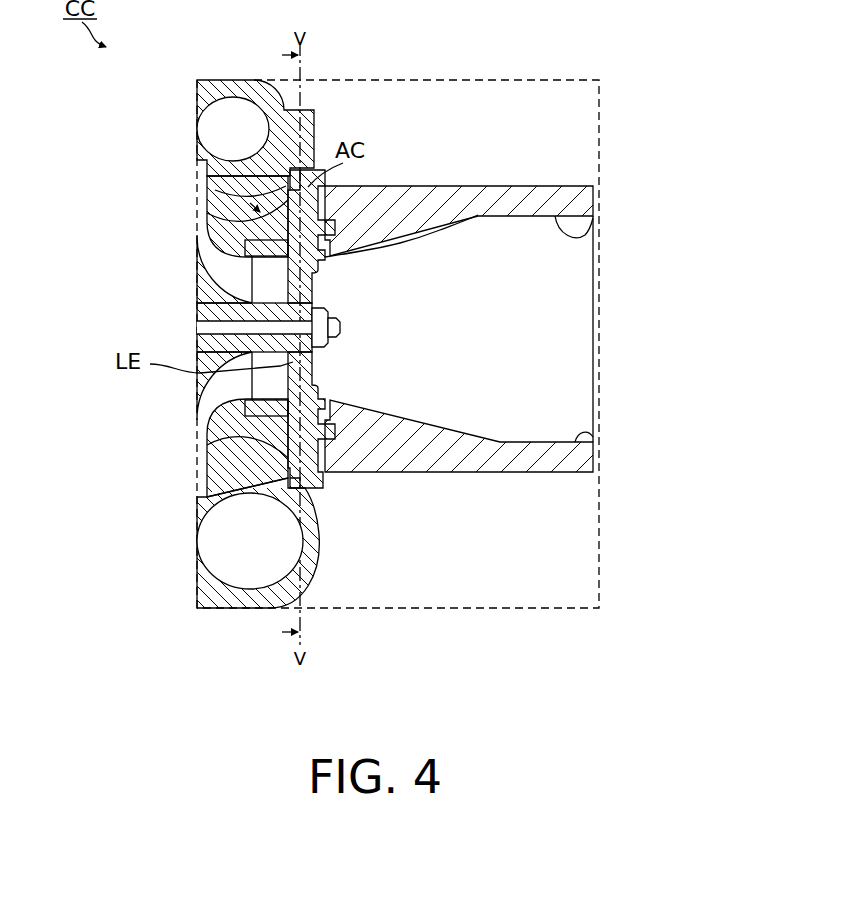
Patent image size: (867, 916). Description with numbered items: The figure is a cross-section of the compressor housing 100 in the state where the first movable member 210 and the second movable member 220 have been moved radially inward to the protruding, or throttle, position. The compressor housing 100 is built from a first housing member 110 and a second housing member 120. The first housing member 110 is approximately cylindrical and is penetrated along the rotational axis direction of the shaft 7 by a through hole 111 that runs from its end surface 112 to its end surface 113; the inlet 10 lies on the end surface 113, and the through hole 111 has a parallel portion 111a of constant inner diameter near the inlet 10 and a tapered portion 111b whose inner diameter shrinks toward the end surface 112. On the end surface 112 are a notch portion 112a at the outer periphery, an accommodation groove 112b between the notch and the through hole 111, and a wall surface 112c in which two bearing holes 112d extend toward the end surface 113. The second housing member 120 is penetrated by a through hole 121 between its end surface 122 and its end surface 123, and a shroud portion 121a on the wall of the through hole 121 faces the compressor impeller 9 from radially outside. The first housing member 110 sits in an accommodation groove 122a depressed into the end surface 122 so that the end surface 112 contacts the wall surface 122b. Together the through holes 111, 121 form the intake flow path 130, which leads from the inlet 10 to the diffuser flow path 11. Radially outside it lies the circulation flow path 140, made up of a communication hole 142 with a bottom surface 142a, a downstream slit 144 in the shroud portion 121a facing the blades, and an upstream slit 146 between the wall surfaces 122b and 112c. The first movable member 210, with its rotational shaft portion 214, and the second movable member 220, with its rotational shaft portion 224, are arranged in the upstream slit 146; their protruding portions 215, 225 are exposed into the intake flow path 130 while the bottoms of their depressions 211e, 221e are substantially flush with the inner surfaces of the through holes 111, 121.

The compressor housing 100 is at (540, 46).
The first housing member 110 is at (474, 186).
The through hole 111 is at (597, 220).
The parallel portion 111a is at (593, 458).
The tapered portion 111b is at (490, 440).
The end surface 113 is at (593, 472).
The second housing member 120 is at (268, 80).
The through hole 121 is at (200, 289).
The shroud portion 121a is at (200, 267).
The end surface 122 is at (317, 121).
The accommodation groove 122a is at (325, 483).
The wall surface 122b is at (322, 184).
The end surface 123 is at (197, 90).
The intake flow path 130 is at (417, 374).
The circulation flow path 140 is at (207, 173).
The communication hole 142 is at (250, 215).
The bottom surface 142a is at (272, 212).
The downstream slit 144 is at (252, 231).
The upstream slit 146 is at (325, 260).
The shaft 7 is at (205, 329).
The compressor impeller 9 is at (199, 235).
The inlet 10 is at (593, 397).
The diffuser flow path 11 is at (207, 181).
The end surface 112 is at (287, 463).
The notch portion 112a is at (287, 481).
The accommodation groove 112b is at (287, 454).
The wall surface 112c is at (200, 405).
The bearing holes 112d is at (212, 424).
The first movable member 210 is at (317, 273).
The rotational shaft portion 214 is at (395, 248).
The protruding portion 215 is at (310, 277).
The depression 211e is at (310, 282).
The second movable member 220 is at (320, 405).
The rotational shaft portion 224 is at (330, 417).
The protruding portion 225 is at (305, 392).
The depression 221e is at (305, 380).